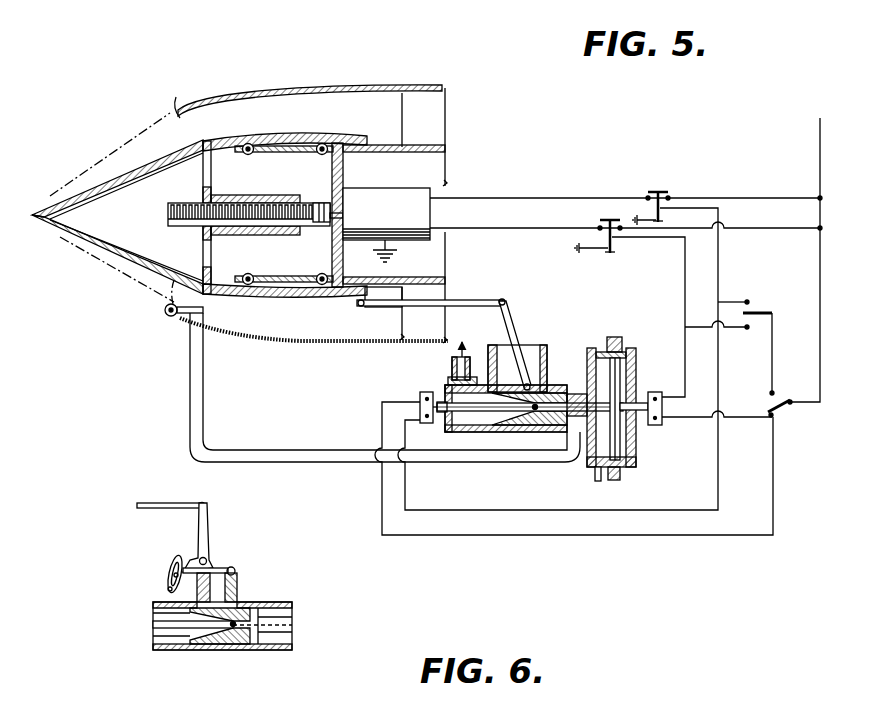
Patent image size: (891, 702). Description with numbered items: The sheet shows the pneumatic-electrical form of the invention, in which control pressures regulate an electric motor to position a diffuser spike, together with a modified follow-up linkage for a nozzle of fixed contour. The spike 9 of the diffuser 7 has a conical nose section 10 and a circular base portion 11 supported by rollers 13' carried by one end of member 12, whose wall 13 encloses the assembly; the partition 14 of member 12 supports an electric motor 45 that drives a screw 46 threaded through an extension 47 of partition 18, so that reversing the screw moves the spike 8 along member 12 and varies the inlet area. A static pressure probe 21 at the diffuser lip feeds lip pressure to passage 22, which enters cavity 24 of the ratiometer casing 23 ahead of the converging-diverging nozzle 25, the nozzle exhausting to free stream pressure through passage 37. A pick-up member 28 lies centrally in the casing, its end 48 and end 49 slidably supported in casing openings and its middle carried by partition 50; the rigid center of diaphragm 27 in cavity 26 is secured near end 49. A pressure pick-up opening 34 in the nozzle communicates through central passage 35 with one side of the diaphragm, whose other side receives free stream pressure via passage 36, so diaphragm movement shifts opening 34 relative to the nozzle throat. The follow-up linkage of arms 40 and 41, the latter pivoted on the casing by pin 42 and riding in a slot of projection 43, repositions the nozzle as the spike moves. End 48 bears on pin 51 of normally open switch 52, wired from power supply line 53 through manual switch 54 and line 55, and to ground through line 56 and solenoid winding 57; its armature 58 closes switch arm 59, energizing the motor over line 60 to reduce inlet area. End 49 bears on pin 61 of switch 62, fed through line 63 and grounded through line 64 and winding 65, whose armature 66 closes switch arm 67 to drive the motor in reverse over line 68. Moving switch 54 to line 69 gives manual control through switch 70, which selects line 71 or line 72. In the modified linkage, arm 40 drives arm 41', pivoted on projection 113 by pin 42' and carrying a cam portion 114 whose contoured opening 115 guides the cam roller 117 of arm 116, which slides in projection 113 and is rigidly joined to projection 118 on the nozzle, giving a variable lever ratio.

In FIG. 5, the diffuser 7 is at (216, 91).
In FIG. 5, the spike 8 is at (267, 88).
In FIG. 5, the spike 9 is at (136, 274).
In FIG. 5, the conical nose section 10 is at (82, 238).
In FIG. 5, the circular base portion 11 is at (302, 135).
In FIG. 5, the member 12 is at (446, 150).
In FIG. 5, the shell section 13 is at (449, 215).
In FIG. 5, the rollers 13' is at (284, 193).
In FIG. 5, the partition 14 is at (346, 173).
In FIG. 5, the partition 18 is at (202, 272).
In FIG. 5, the static pressure probe 21 is at (166, 315).
In FIG. 5, the passage 22 is at (190, 412).
In FIG. 5, the casing 23 is at (515, 436).
In FIG. 6, the casing 23 is at (293, 600).
In FIG. 5, the cavity 24 is at (482, 421).
In FIG. 5, the converging-diverging nozzle 25 is at (548, 417).
In FIG. 6, the converging-diverging nozzle 25 is at (247, 645).
In FIG. 5, the cavity 26 is at (603, 356).
In FIG. 5, the diaphragm 27 is at (631, 353).
In FIG. 5, the pick-up member 28 is at (462, 410).
In FIG. 6, the pick-up member 28 is at (160, 623).
In FIG. 5, the pressure pick-up opening 34 is at (536, 412).
In FIG. 6, the pressure pick-up opening 34 is at (233, 629).
In FIG. 5, the central passage 35 is at (573, 398).
In FIG. 6, the central passage 35 is at (293, 623).
In FIG. 5, the passage 36 is at (600, 480).
In FIG. 5, the passage 37 is at (466, 352).
In FIG. 5, the arm 40 is at (478, 300).
In FIG. 6, the arm 40 is at (165, 502).
In FIG. 5, the arm 41 is at (521, 338).
In FIG. 5, the pin 42 is at (523, 353).
In FIG. 5, the projection 43 is at (524, 388).
In FIG. 5, the electric motor 45 is at (418, 188).
In FIG. 5, the screw 46 is at (313, 203).
In FIG. 5, the extension 47 is at (240, 202).
In FIG. 5, the end 48 is at (447, 390).
In FIG. 5, the end 49 is at (635, 402).
In FIG. 5, the partition 50 is at (589, 448).
In FIG. 5, the pin 51 is at (430, 424).
In FIG. 5, the switch 52 is at (420, 398).
In FIG. 5, the power supply line 53 is at (822, 168).
In FIG. 5, the manual switch 54 is at (783, 410).
In FIG. 5, the line 55 is at (684, 536).
In FIG. 5, the line 56 is at (551, 512).
In FIG. 5, the solenoid winding 57 is at (660, 224).
In FIG. 5, the armature 58 is at (669, 198).
In FIG. 5, the switch arm 59 is at (659, 191).
In FIG. 5, the line 60 is at (594, 197).
In FIG. 5, the pin 61 is at (663, 407).
In FIG. 5, the switch 62 is at (657, 426).
In FIG. 5, the line 63 is at (697, 418).
In FIG. 5, the line 64 is at (685, 303).
In FIG. 5, the solenoid winding 65 is at (615, 250).
In FIG. 5, the armature 66 is at (598, 229).
In FIG. 5, the switch arm 67 is at (611, 219).
In FIG. 5, the line 68 is at (500, 230).
In FIG. 5, the line 69 is at (774, 345).
In FIG. 5, the manual switch 70 is at (763, 312).
In FIG. 5, the line 71 is at (734, 300).
In FIG. 5, the line 72 is at (742, 330).
In FIG. 6, the arm 41' is at (220, 528).
In FIG. 6, the pin 42' is at (231, 542).
In FIG. 6, the projection 113 is at (216, 567).
In FIG. 6, the cam portion 114 is at (171, 559).
In FIG. 6, the opening 115 is at (163, 586).
In FIG. 6, the arm 116 is at (235, 570).
In FIG. 6, the cam roller 117 is at (168, 575).
In FIG. 6, the projection 118 is at (238, 588).